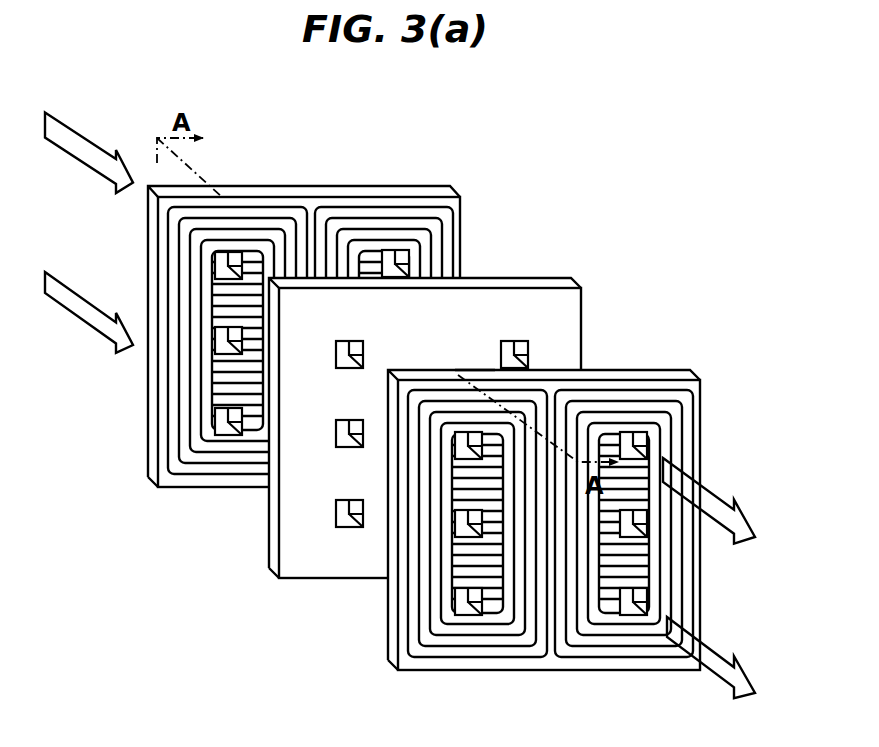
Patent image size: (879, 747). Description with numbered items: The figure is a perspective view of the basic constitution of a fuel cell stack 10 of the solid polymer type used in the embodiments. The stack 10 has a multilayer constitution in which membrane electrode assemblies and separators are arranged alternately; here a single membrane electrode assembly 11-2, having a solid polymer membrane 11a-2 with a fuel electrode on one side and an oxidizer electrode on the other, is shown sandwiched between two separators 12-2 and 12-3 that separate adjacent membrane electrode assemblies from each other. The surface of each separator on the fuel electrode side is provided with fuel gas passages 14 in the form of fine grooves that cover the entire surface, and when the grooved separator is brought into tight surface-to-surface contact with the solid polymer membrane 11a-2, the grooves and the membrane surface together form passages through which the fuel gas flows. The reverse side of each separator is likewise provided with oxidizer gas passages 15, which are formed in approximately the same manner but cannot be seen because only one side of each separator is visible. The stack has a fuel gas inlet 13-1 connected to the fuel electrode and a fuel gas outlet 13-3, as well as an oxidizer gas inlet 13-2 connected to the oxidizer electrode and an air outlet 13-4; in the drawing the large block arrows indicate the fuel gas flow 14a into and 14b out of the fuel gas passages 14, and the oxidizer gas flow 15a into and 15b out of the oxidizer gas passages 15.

The fuel cell stack 10 is at (429, 426).
The membrane electrode assembly 11-2 is at (504, 400).
The solid polymer membrane 11a-2 is at (425, 428).
The separator 12-2 is at (339, 308).
The separator 12-3 is at (696, 373).
The fuel gas inlet 13-1 is at (222, 420).
The oxidizer gas inlet 13-2 is at (217, 267).
The fuel gas outlet 13-3 is at (400, 262).
The air outlet 13-4 is at (636, 597).
The fuel gas passages 14 is at (300, 242).
The fuel gas inflow 14a is at (70, 300).
The fuel gas outflow 14b is at (740, 518).
The oxidizer gas passages 15 is at (474, 370).
The oxidizer gas inflow 15a is at (81, 148).
The oxidizer gas outflow 15b is at (735, 677).